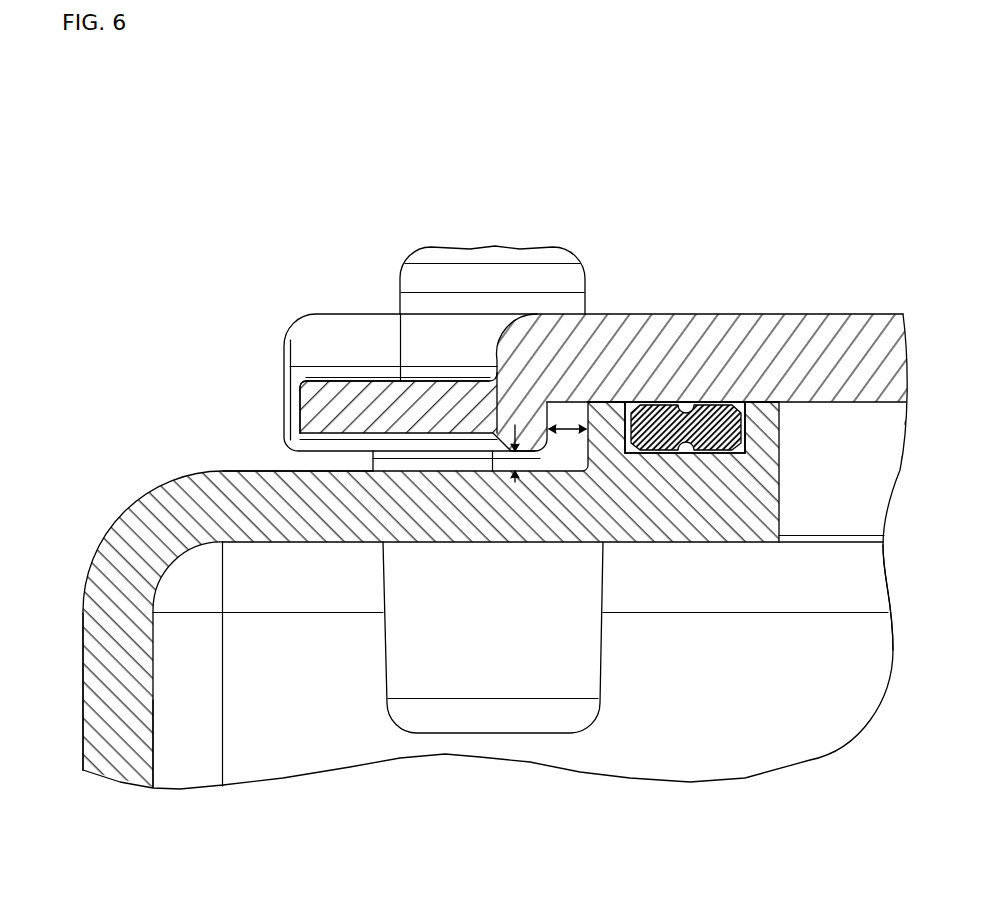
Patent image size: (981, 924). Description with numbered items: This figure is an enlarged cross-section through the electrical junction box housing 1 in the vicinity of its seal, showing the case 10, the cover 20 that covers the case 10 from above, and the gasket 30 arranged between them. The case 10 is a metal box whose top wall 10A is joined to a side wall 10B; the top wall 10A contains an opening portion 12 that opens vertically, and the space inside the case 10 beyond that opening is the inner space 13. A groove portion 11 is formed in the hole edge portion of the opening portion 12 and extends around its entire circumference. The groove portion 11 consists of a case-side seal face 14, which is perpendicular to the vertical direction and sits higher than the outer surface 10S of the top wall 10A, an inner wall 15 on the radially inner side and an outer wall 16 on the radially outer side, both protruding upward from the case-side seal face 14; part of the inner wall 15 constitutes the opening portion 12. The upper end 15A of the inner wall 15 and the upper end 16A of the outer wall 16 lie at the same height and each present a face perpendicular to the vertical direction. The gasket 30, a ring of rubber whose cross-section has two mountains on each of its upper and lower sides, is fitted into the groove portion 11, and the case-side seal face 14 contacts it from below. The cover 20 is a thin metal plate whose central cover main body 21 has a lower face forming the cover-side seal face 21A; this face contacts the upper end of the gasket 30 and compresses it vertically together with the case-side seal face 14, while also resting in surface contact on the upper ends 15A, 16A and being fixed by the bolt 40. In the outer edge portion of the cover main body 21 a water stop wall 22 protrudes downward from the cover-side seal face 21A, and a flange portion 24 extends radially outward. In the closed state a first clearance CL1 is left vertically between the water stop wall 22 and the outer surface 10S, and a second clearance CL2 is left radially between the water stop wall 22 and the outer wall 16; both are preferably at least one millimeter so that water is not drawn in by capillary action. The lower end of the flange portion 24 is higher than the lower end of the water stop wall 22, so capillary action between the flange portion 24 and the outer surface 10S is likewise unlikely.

The electrical junction box housing 1 is at (545, 108).
The case 10 is at (70, 590).
The top wall 10A is at (323, 508).
The side wall 10B is at (120, 708).
The outer surface 10S is at (313, 470).
The groove portion 11 is at (767, 851).
The opening portion 12 is at (780, 473).
The inner space 13 is at (819, 692).
The case-side seal face 14 is at (692, 456).
The inner wall 15 is at (762, 437).
The upper end 15A is at (768, 415).
The outer wall 16 is at (610, 430).
The upper end 16A is at (605, 403).
The cover 20 is at (262, 334).
The cover main body 21 is at (824, 370).
The cover-side seal face 21A is at (688, 410).
The water stop wall 22 is at (527, 433).
The flange portion 24 is at (385, 413).
The gasket 30 is at (712, 435).
The bolt 40 is at (462, 283).
The first clearance CL1 is at (517, 432).
The second clearance CL2 is at (565, 428).